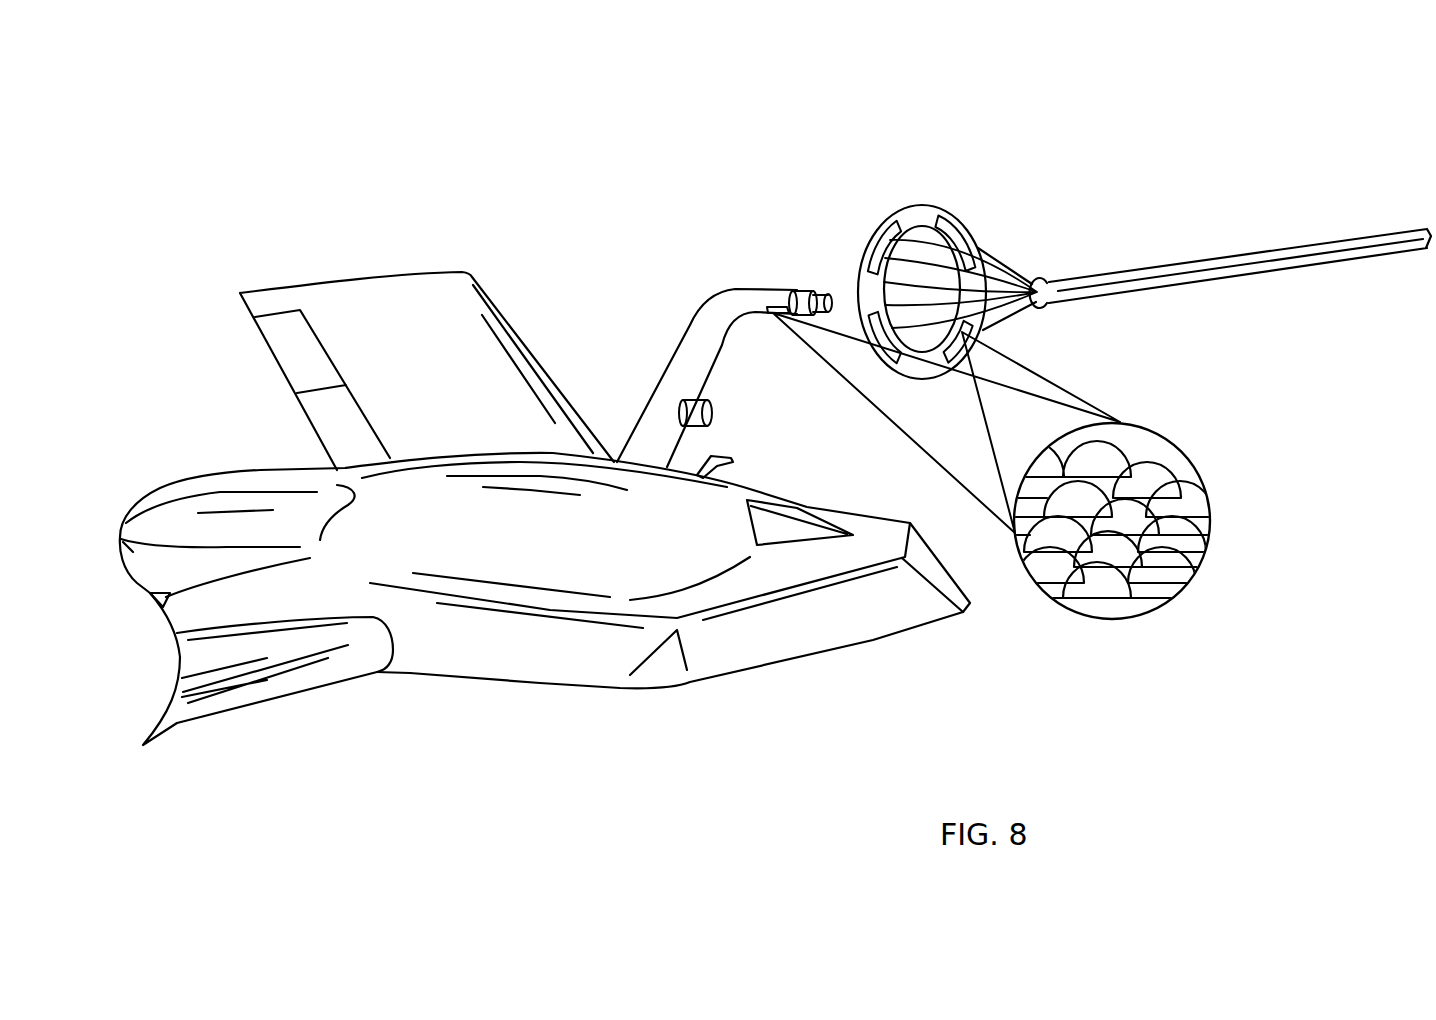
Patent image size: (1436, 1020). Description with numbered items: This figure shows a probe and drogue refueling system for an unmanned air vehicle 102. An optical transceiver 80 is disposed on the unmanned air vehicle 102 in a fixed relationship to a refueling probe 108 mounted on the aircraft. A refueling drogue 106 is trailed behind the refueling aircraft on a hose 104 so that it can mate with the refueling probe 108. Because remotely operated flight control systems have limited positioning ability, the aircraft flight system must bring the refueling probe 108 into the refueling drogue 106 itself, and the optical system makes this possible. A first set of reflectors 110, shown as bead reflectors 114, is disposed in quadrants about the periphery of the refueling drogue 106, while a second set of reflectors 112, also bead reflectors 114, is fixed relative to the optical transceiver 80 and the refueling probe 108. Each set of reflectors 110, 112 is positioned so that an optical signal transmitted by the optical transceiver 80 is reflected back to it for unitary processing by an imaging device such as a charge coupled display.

The optical transceiver 80 is at (711, 414).
The unmanned air vehicle 102 is at (462, 283).
The hose 104 is at (1223, 265).
The refueling drogue 106 is at (987, 248).
The refueling probe 108 is at (727, 290).
The first set of reflectors 110 is at (967, 222).
The second set of reflectors 112 is at (773, 316).
The bead reflectors 114 is at (1185, 457).